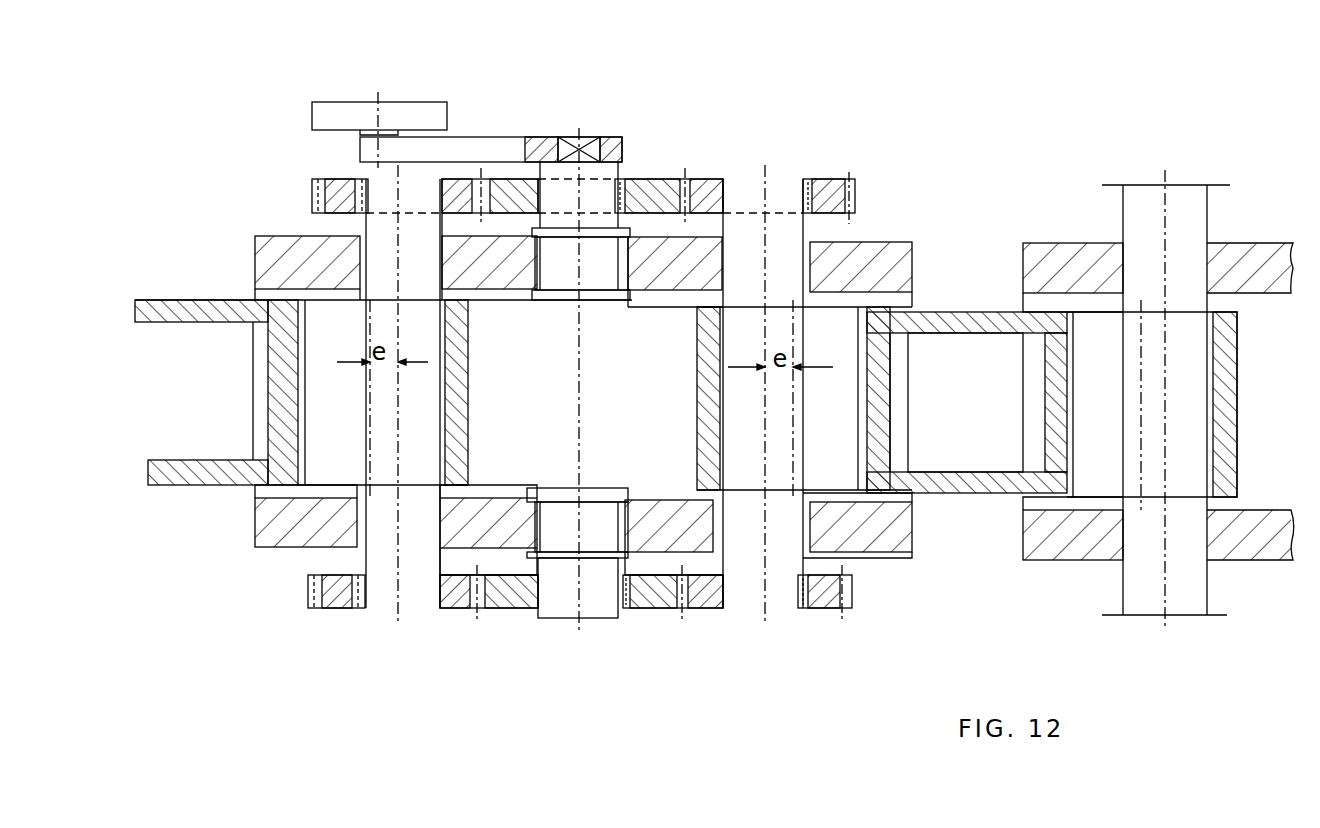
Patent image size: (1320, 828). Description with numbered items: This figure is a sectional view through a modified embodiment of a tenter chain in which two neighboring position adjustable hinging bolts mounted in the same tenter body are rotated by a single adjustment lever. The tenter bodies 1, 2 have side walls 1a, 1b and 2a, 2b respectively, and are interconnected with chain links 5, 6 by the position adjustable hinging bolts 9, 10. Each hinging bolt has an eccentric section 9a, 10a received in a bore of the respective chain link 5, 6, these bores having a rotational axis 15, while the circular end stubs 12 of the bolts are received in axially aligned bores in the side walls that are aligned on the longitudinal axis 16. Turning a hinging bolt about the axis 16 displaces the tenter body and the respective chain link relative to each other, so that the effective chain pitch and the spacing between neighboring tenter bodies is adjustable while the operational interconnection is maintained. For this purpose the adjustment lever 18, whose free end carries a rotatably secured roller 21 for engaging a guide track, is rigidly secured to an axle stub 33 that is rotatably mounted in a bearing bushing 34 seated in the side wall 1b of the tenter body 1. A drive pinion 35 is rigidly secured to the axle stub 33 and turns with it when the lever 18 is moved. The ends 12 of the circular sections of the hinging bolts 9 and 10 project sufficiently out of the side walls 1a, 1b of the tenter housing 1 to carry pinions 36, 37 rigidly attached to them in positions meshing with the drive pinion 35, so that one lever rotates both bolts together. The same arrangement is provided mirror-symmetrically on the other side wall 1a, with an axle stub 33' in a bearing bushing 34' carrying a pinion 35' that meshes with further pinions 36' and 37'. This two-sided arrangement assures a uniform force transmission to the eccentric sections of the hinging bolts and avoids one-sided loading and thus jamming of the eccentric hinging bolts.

The tenter body 1 is at (487, 270).
The side wall 1a is at (883, 553).
The side wall 1b is at (893, 250).
The tenter body 2 is at (1080, 228).
The side wall 2a is at (1230, 553).
The side wall 2b is at (1253, 292).
The chain link 5 is at (195, 485).
The chain link 6 is at (955, 490).
The hinging bolt 9 is at (418, 405).
The eccentric section 9a is at (318, 409).
The hinging bolt 10 is at (745, 412).
The eccentric section 10a is at (849, 429).
The circular end stub 12 is at (425, 256).
The rotational axis 15 is at (368, 456).
The longitudinal axis 16 is at (765, 178).
The adjustment lever 18 is at (485, 143).
The roller 21 is at (402, 112).
The axle stub 33 is at (599, 289).
The axle stub 33' is at (577, 603).
The bearing bushing 34 is at (579, 379).
The bearing bushing 34' is at (582, 476).
The drive pinion 35 is at (735, 150).
The drive pinion 35' is at (737, 630).
The pinion 36 is at (706, 147).
The pinion 36' is at (722, 638).
The pinion 37 is at (390, 180).
The pinion 37' is at (423, 631).